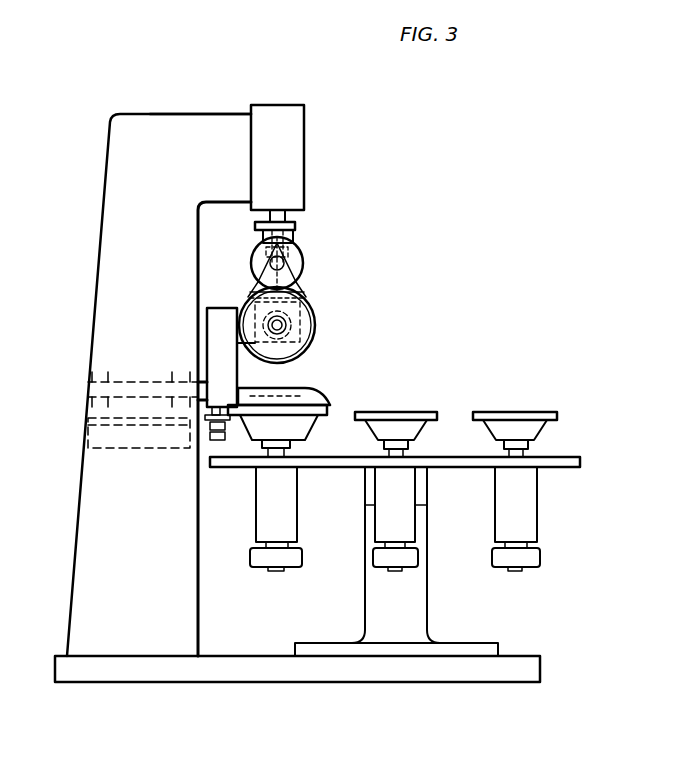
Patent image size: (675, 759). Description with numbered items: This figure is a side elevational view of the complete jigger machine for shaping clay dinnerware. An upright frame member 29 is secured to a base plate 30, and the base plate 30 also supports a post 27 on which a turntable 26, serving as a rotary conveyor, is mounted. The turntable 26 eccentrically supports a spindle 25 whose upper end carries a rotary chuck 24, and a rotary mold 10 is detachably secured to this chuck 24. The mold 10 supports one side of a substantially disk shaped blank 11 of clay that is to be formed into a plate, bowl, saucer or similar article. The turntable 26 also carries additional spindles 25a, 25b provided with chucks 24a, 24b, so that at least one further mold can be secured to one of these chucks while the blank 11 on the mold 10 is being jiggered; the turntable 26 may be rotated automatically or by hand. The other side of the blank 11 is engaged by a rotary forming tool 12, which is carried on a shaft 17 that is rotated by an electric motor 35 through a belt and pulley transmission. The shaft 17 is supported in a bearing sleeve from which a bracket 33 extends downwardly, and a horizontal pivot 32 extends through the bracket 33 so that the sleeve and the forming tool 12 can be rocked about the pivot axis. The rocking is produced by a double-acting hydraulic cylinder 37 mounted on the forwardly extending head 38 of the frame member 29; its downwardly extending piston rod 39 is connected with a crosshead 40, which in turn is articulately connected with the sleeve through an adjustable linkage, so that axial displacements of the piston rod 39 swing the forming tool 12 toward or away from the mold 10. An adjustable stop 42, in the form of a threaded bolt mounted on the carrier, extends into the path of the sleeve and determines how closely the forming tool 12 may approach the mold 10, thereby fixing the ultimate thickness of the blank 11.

The rotary mold 10 is at (322, 407).
The blank 11 is at (300, 392).
The rotary forming tool 12 is at (312, 303).
The shaft 17 is at (296, 325).
The rotary chuck 24 is at (292, 428).
The chuck 24a is at (412, 426).
The chuck 24b is at (545, 426).
The spindle 25 is at (265, 527).
The spindle 25a is at (397, 522).
The spindle 25b is at (522, 522).
The turntable 26 is at (237, 470).
The post 27 is at (405, 597).
The upright frame member 29 is at (130, 185).
The base plate 30 is at (250, 667).
The horizontal pivot 32 is at (95, 385).
The bracket 33 is at (218, 348).
The electric motor 35 is at (296, 258).
The double-acting hydraulic cylinder 37 is at (290, 137).
The head 38 is at (202, 118).
The piston rod 39 is at (270, 216).
The crosshead 40 is at (295, 232).
The adjustable stop 42 is at (212, 442).